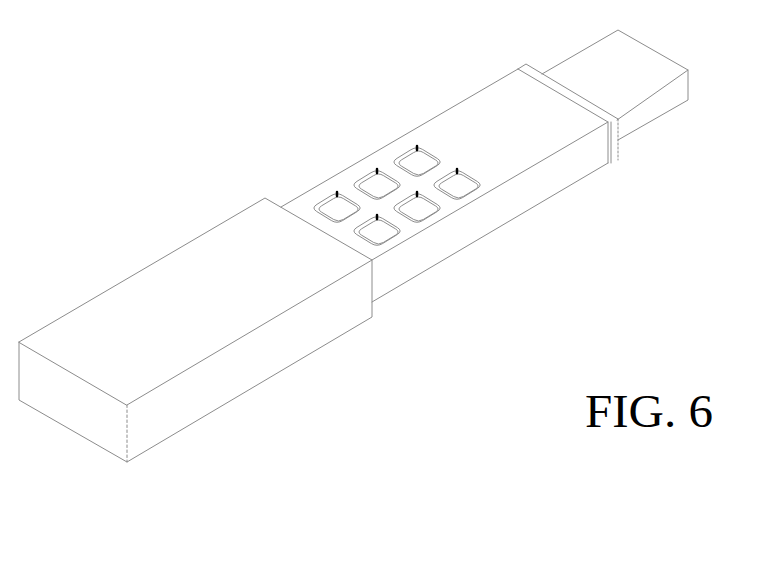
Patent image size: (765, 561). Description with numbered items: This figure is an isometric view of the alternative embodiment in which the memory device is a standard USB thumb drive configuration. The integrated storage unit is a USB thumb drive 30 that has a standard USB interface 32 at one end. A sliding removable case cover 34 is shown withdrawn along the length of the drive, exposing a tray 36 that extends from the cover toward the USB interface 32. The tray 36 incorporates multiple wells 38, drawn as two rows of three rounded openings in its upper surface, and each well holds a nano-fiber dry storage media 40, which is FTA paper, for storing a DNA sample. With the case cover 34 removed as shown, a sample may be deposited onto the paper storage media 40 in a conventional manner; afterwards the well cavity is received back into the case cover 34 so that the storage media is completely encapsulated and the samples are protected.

The USB thumb drive 30 is at (380, 279).
The USB interface 32 is at (650, 105).
The sliding removable case cover 34 is at (150, 442).
The tray 36 is at (450, 172).
The wells 38 is at (433, 222).
The nano-fiber dry storage media 40 is at (462, 183).